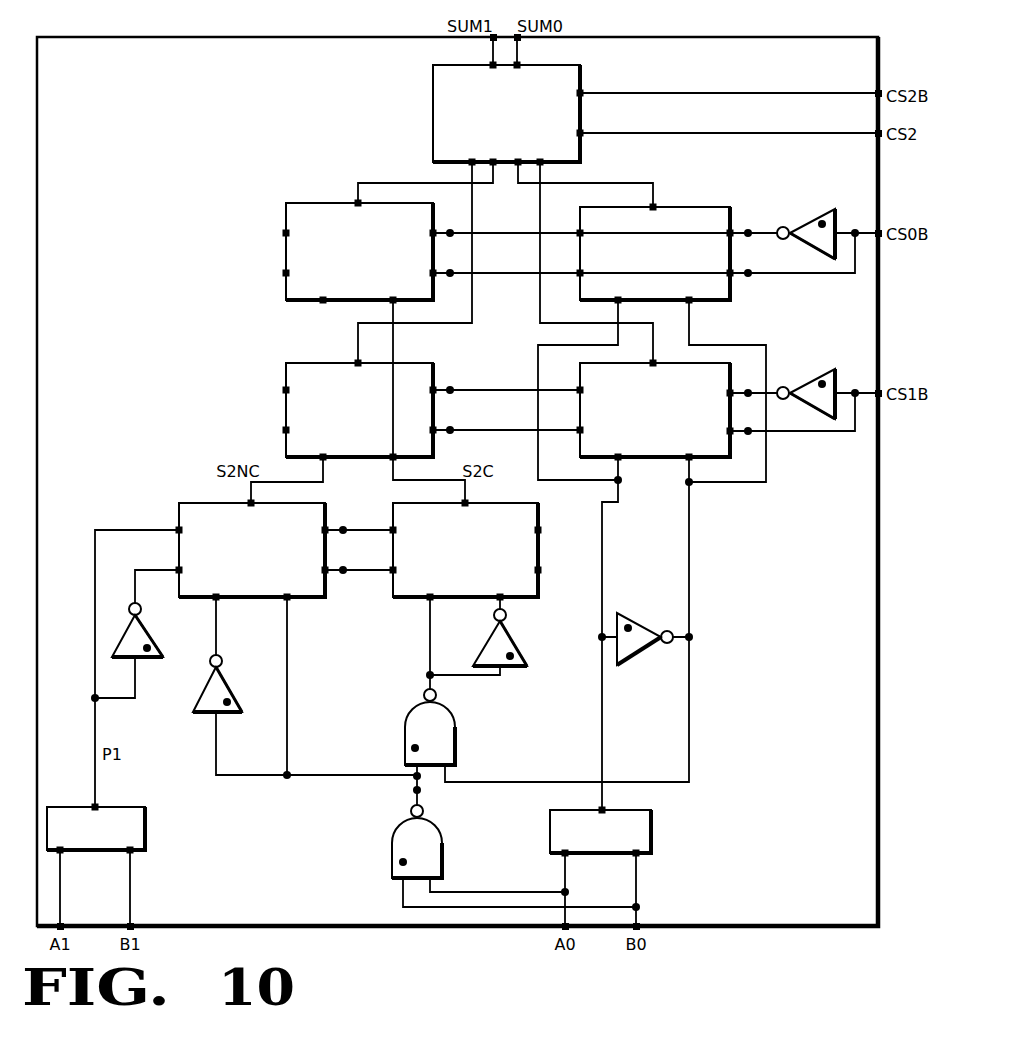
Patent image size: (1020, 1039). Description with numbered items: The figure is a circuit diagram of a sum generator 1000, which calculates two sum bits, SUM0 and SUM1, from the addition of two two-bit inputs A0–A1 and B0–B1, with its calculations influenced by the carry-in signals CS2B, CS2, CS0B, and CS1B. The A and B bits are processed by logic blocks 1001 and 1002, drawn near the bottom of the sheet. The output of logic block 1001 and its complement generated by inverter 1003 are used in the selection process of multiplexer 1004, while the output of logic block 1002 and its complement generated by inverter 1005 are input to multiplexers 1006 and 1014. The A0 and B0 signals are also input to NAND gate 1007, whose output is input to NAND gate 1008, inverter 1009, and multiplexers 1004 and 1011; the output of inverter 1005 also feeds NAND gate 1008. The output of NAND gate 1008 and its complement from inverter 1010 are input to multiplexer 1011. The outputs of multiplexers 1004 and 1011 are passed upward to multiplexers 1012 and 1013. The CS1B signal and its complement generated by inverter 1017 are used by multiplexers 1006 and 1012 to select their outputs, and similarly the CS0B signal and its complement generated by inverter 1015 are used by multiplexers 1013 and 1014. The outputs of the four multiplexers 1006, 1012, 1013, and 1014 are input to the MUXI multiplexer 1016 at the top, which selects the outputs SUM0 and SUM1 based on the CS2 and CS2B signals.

The sum generator 1000 is at (93, 65).
The logic block 1001 is at (147, 826).
The logic block 1002 is at (652, 830).
The inverter 1003 is at (158, 642).
The multiplexer 1004 is at (179, 512).
The inverter 1005 is at (662, 609).
The multiplexer 1006 is at (672, 462).
The NAND gate 1007 is at (443, 840).
The NAND gate 1008 is at (457, 740).
The inverter 1009 is at (232, 690).
The inverter 1010 is at (516, 645).
The multiplexer 1011 is at (540, 553).
The multiplexer 1012 is at (286, 368).
The multiplexer 1013 is at (286, 208).
The multiplexer 1014 is at (716, 207).
The inverter 1015 is at (810, 220).
The MUXI multiplexer 1016 is at (488, 144).
The inverter 1017 is at (810, 380).